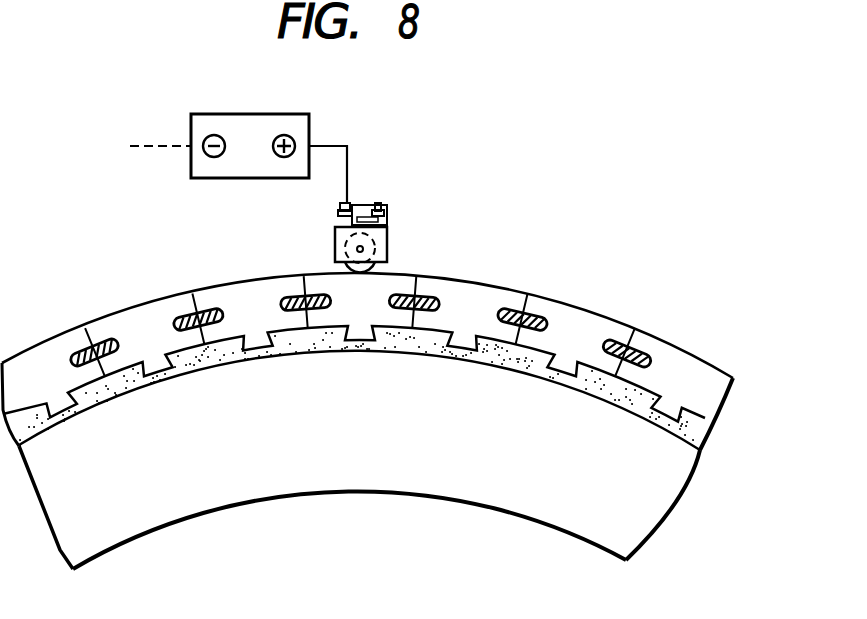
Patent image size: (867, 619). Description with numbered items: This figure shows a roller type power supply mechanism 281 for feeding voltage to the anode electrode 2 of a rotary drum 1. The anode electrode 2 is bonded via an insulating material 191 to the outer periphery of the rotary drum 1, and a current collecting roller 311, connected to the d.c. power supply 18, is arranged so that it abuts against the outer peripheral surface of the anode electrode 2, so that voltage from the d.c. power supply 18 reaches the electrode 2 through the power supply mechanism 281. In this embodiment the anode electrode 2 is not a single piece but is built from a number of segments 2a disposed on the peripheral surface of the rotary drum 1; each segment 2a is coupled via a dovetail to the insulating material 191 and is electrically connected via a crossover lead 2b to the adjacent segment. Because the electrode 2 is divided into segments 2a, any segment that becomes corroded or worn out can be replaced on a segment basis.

The d.c. power supply 18 is at (257, 114).
The power supply mechanism 281 is at (383, 203).
The current collecting roller 311 is at (346, 268).
The anode electrode 2 is at (696, 359).
The segments 2a is at (505, 307).
The crossover lead 2b is at (626, 336).
The insulating material 191 is at (705, 447).
The rotary drum 1 is at (663, 507).